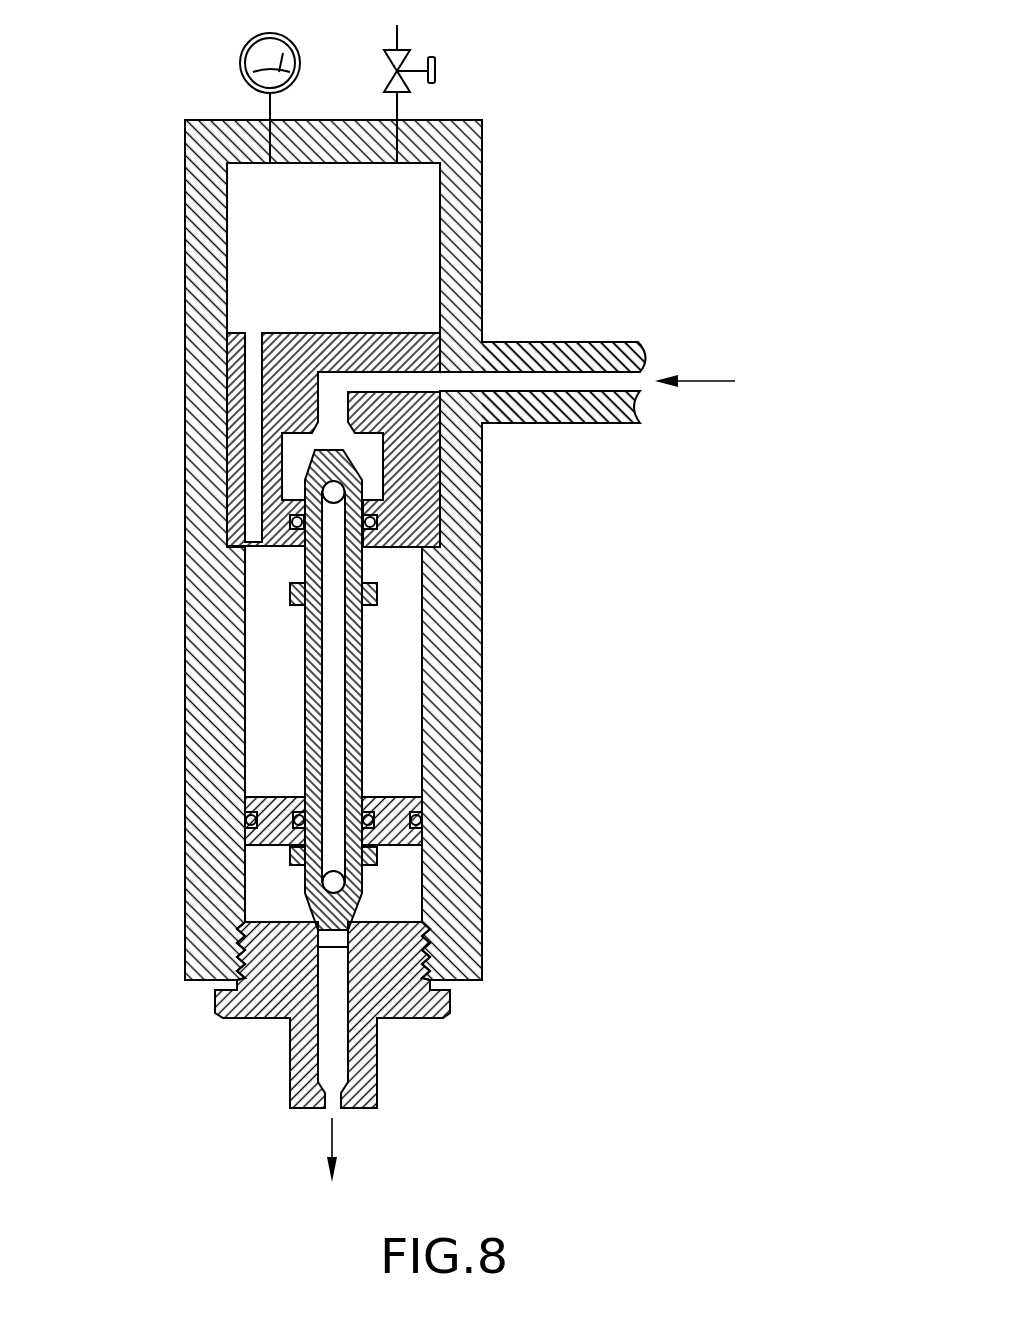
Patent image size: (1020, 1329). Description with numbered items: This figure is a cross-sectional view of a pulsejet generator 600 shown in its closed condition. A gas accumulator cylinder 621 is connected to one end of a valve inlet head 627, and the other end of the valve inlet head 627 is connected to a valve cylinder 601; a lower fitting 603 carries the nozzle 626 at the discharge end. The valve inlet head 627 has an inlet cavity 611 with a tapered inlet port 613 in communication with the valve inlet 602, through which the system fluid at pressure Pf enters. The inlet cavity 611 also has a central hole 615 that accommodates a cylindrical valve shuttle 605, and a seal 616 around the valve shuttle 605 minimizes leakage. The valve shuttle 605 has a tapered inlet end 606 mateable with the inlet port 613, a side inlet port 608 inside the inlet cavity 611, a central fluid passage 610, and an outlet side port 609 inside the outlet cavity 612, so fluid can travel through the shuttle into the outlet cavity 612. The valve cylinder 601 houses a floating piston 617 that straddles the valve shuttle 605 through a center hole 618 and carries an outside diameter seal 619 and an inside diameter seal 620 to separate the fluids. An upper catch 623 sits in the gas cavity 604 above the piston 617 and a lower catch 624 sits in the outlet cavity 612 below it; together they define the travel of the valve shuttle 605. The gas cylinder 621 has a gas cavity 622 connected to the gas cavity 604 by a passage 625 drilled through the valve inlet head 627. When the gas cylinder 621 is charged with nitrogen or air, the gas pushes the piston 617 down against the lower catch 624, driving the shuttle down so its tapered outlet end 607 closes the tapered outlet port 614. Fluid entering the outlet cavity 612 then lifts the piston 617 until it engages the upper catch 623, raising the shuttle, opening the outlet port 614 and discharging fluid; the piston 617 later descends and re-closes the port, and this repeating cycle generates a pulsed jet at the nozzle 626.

The pulsejet generator 600 is at (599, 126).
The valve cylinder 601 is at (447, 696).
The valve inlet 602 is at (645, 378).
The outlet fitting 603 is at (230, 1010).
The gas cavity 604 is at (265, 578).
The valve shuttle 605 is at (310, 655).
The tapered inlet end 606 is at (355, 453).
The tapered outlet end 607 is at (303, 908).
The side inlet port 608 is at (336, 492).
The outlet side port 609 is at (340, 886).
The central fluid passage 610 is at (342, 658).
The inlet cavity 611 is at (293, 448).
The outlet cavity 612 is at (270, 880).
The tapered inlet port 613 is at (313, 422).
The outlet port 614 is at (377, 947).
The central hole 615 is at (425, 548).
The seal 616 is at (290, 522).
The floating piston 617 is at (398, 812).
The center hole 618 is at (363, 792).
The outside diameter seal 619 is at (250, 818).
The inside diameter seal 620 is at (297, 812).
The gas accumulator cylinder 621 is at (207, 203).
The gas cavity 622 is at (252, 288).
The upper catch 623 is at (376, 596).
The lower catch 624 is at (377, 858).
The passage 625 is at (252, 382).
The nozzle 626 is at (337, 1110).
The valve inlet head 627 is at (278, 358).